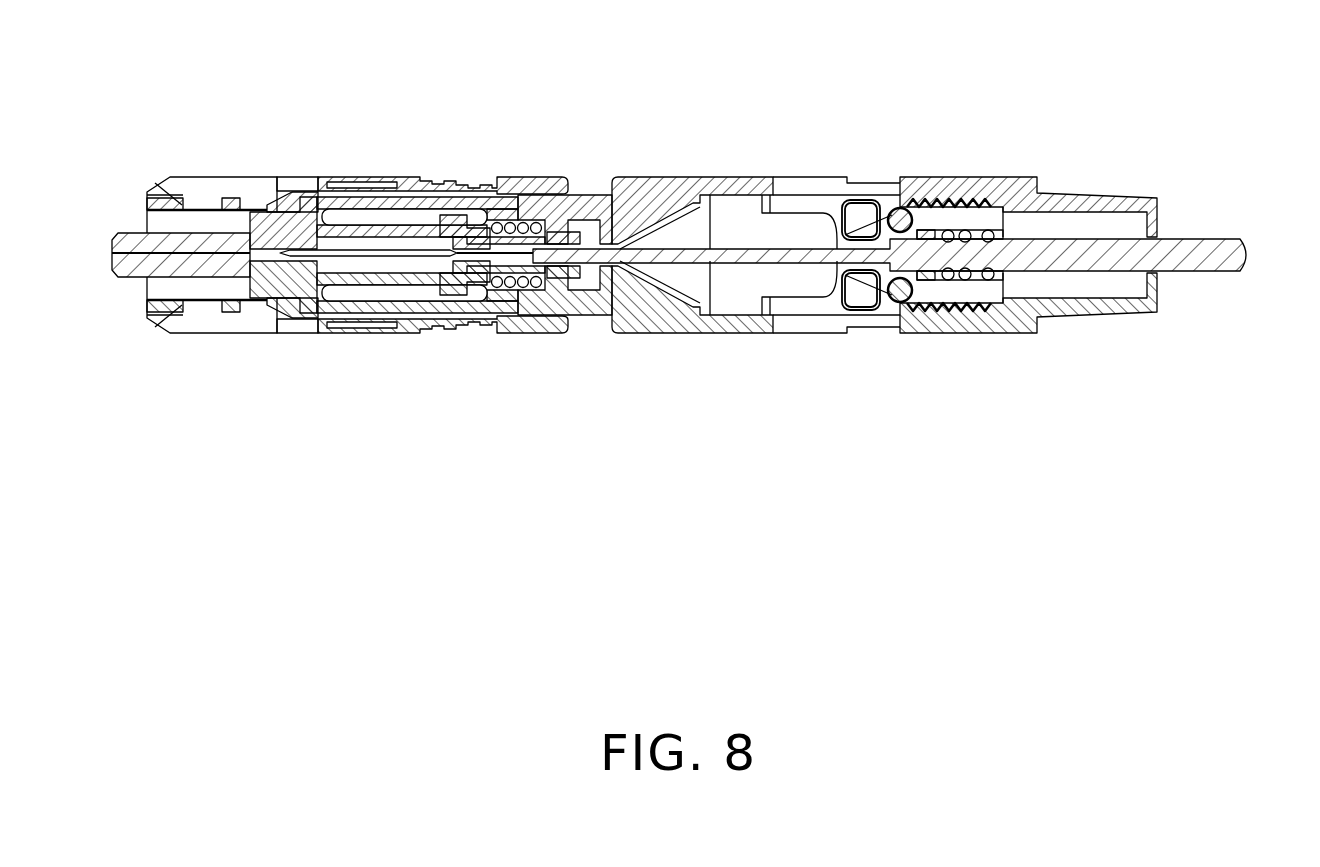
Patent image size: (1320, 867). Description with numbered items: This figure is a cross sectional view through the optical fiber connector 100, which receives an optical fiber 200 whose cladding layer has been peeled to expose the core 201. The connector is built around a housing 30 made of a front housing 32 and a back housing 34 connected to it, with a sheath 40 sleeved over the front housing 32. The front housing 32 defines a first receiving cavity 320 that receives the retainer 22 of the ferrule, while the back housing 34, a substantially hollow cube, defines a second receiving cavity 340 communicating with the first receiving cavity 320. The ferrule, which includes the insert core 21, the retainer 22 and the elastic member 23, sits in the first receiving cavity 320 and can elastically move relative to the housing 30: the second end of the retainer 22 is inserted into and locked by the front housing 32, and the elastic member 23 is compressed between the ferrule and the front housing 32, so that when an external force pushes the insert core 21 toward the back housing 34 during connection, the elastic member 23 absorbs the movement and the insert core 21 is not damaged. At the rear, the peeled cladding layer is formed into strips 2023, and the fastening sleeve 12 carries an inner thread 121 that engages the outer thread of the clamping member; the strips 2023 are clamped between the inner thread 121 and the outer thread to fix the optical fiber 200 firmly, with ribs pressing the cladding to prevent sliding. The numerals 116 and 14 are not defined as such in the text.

The optical fiber connector 100 is at (540, 55).
The insert core 21 is at (200, 234).
The first receiving cavity 320 is at (232, 222).
The retainer 22 is at (297, 300).
The elastic member 23 is at (513, 323).
The core 201 is at (500, 222).
The sheath 40 is at (360, 190).
The front housing 32 is at (553, 331).
The back housing 34 is at (681, 331).
The housing 30 is at (698, 420).
The second receiving cavity 340 is at (753, 222).
The strips 2023 is at (893, 208).
The fastening sleeve 12 is at (1030, 185).
The inner thread 121 is at (993, 313).
The contact sleeve 116 is at (1000, 215).
The spring contact 14 is at (1000, 215).
The optical fiber 200 is at (1213, 245).